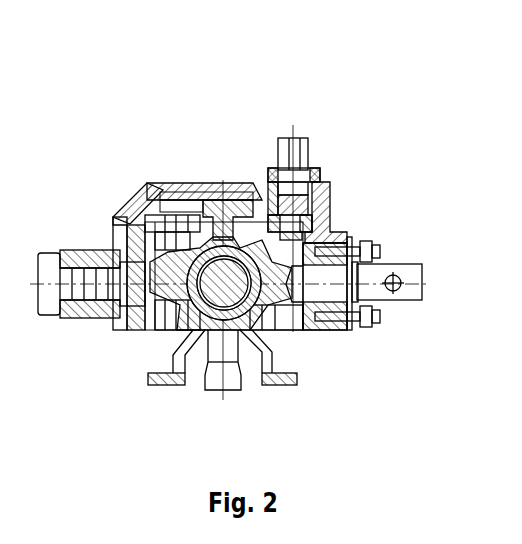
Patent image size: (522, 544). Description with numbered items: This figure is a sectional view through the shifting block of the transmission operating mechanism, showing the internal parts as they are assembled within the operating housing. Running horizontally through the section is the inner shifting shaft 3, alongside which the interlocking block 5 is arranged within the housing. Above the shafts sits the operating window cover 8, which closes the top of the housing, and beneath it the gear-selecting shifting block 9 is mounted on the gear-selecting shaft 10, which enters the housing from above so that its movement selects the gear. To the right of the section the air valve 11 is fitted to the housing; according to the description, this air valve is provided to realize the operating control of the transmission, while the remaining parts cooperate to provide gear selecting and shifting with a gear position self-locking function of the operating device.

The inner shifting shaft 3 is at (153, 297).
The interlocking block 5 is at (267, 353).
The operating window cover 8 is at (165, 186).
The gear-selecting shifting block 9 is at (229, 206).
The gear-selecting shaft 10 is at (284, 192).
The air valve 11 is at (384, 273).